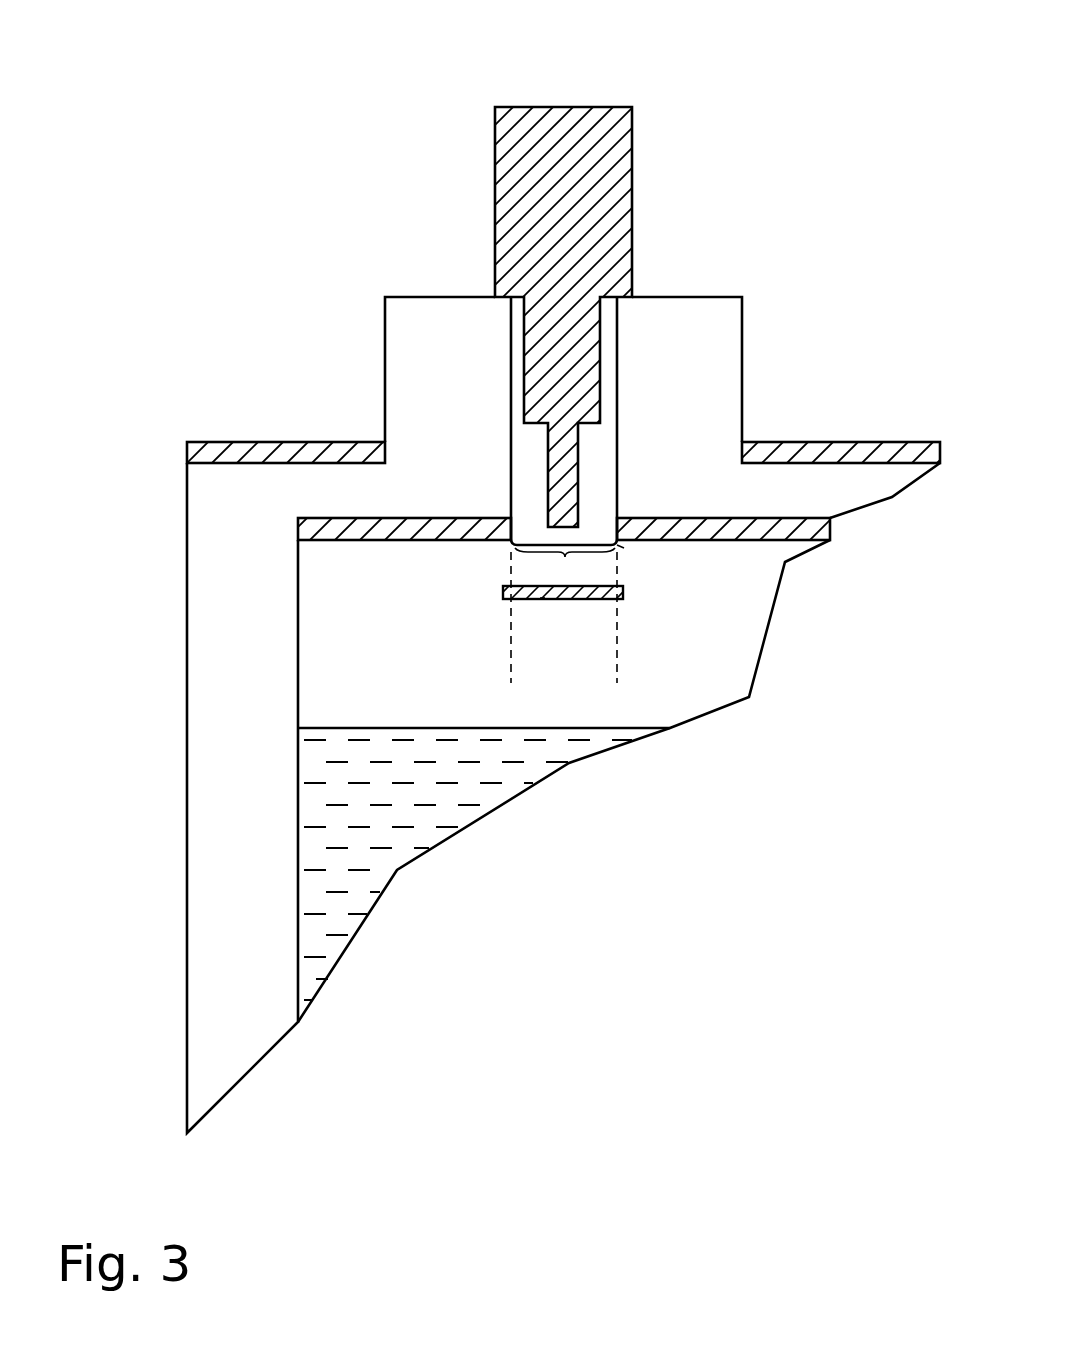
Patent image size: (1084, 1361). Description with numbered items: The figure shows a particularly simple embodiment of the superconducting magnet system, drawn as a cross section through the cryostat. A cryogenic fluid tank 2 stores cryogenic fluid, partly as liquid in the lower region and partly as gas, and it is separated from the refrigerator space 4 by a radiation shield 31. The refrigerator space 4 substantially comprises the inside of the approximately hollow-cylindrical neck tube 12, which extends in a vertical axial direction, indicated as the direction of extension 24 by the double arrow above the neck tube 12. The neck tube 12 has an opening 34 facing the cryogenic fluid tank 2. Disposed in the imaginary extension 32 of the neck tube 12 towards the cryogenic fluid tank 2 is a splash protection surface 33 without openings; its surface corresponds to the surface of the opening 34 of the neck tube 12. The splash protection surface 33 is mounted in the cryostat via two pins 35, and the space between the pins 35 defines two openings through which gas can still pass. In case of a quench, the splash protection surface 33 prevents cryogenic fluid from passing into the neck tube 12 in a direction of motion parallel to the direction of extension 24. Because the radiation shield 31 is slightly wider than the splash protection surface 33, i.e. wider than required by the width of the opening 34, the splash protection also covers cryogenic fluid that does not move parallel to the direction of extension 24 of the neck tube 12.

The cryogenic fluid tank 2 is at (333, 623).
The refrigerator space 4 is at (588, 458).
The neck tube 12 is at (510, 368).
The direction of extension of the neck tube 24 is at (561, 22).
The radiation shield 31 is at (627, 603).
The imaginary extension of the neck tube 32 is at (615, 660).
The splash protection surface 33 is at (543, 597).
The opening of the neck tube 34 is at (565, 566).
The pins 35 is at (625, 548).